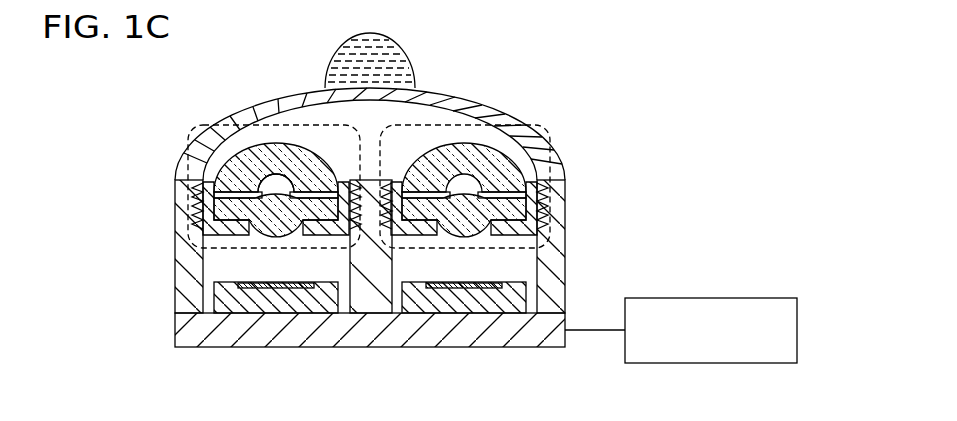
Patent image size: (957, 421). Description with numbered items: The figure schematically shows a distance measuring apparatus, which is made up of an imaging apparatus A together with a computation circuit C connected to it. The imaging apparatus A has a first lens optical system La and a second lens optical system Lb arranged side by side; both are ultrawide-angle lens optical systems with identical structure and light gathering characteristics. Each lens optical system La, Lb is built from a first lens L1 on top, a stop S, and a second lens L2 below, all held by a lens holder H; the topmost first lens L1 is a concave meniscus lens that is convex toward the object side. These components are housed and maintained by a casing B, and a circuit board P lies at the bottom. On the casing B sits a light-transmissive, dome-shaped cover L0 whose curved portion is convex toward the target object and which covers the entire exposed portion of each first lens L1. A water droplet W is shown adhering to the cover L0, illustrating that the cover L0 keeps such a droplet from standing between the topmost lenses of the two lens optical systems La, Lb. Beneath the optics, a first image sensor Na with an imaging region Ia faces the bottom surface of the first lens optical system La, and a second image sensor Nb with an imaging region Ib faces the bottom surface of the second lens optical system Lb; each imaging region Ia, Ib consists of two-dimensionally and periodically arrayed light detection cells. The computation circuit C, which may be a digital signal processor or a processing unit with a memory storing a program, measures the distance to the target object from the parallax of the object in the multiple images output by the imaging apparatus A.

The imaging apparatus A is at (133, 121).
The first lens optical system La is at (190, 138).
The second lens optical system Lb is at (550, 143).
The cover L0 is at (288, 99).
The first lens L1 is at (230, 170).
The second lens L2 is at (262, 233).
The stop S is at (265, 172).
The water droplet W is at (400, 62).
The casing B is at (188, 267).
The circuit board P is at (186, 332).
The lens holder H is at (323, 230).
The first image sensor Na is at (253, 300).
The second image sensor Nb is at (437, 300).
The imaging region Ia is at (308, 290).
The imaging region Ib is at (488, 290).
The computation circuit C is at (735, 297).